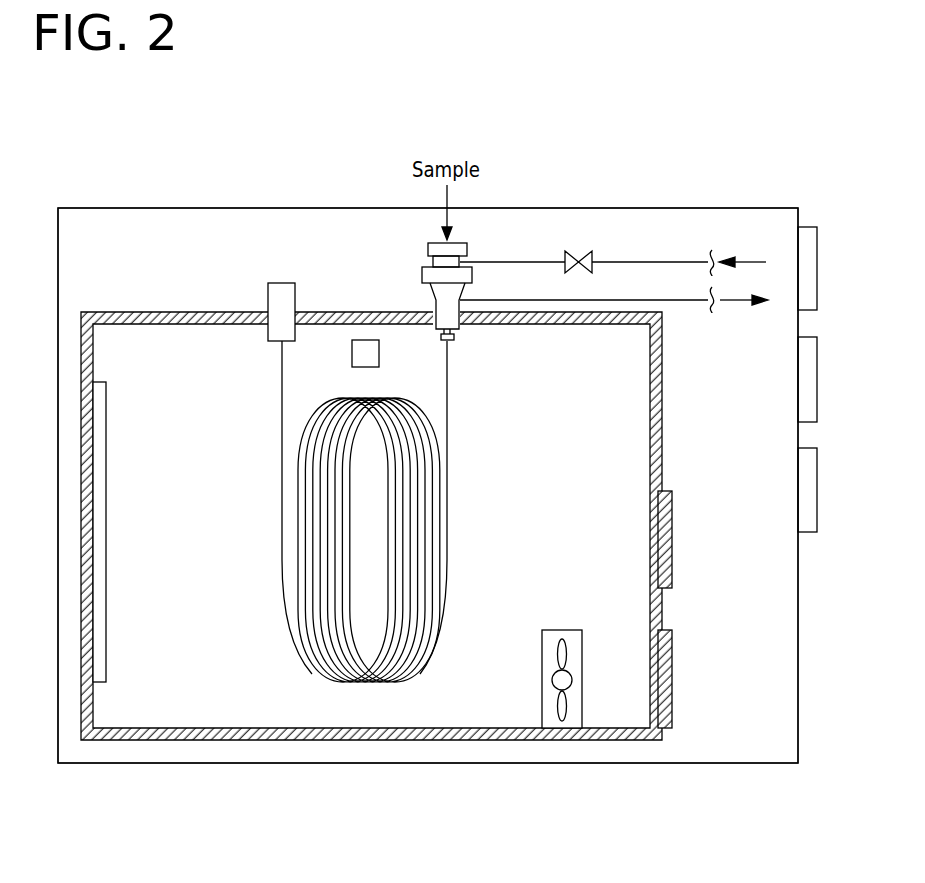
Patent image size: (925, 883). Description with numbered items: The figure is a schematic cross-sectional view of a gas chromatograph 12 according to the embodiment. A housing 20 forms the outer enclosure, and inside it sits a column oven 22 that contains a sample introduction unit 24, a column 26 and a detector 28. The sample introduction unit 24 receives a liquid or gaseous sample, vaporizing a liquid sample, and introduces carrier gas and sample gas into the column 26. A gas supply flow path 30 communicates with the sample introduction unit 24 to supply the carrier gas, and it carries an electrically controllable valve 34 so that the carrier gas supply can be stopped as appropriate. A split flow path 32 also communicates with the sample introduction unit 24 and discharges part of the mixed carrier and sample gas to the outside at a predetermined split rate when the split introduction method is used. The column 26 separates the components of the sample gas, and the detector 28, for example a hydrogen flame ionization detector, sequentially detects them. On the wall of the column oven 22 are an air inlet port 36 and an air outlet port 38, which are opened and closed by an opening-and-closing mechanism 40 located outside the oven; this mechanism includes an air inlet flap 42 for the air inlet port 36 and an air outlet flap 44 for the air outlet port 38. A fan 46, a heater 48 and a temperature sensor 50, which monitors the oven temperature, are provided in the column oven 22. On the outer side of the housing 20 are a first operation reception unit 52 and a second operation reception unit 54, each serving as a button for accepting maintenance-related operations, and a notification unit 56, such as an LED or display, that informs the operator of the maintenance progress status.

The gas chromatograph 12 is at (428, 428).
The housing 20 is at (103, 208).
The column oven 22 is at (130, 312).
The sample introduction unit 24 is at (422, 268).
The column 26 is at (290, 660).
The detector 28 is at (283, 283).
The gas supply flow path 30 is at (675, 262).
The split flow path 32 is at (675, 300).
The valve 34 is at (580, 256).
The air inlet port 36 is at (672, 683).
The air outlet port 38 is at (672, 545).
The opening-and-closing mechanism 40 is at (696, 599).
The air inlet flap 42 is at (696, 676).
The air outlet flap 44 is at (696, 530).
The fan 46 is at (582, 652).
The heater 48 is at (106, 425).
The temperature sensor 50 is at (379, 358).
The first operation reception unit 52 is at (817, 373).
The second operation reception unit 54 is at (817, 488).
The notification unit 56 is at (817, 270).